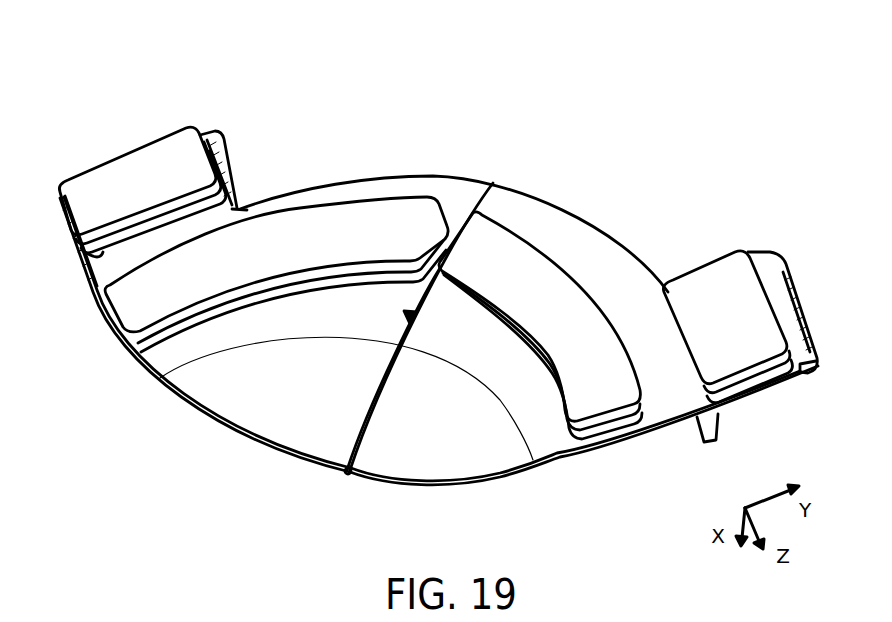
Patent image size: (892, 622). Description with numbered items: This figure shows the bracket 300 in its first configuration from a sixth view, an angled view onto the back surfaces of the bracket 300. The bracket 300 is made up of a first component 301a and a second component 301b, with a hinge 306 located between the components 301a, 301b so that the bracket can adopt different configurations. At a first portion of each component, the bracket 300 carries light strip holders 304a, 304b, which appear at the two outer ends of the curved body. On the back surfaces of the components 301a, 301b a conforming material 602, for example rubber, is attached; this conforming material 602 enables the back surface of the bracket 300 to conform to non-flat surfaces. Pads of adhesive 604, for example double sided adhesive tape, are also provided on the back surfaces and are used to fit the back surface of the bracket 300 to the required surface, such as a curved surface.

The bracket 300 is at (648, 66).
The first component 301a is at (302, 155).
The second component 301b is at (638, 198).
The light strip holder 304a is at (113, 97).
The light strip holder 304b is at (791, 222).
The hinge 306 is at (500, 170).
The conforming material 602 is at (95, 290).
The adhesive 604 is at (178, 136).